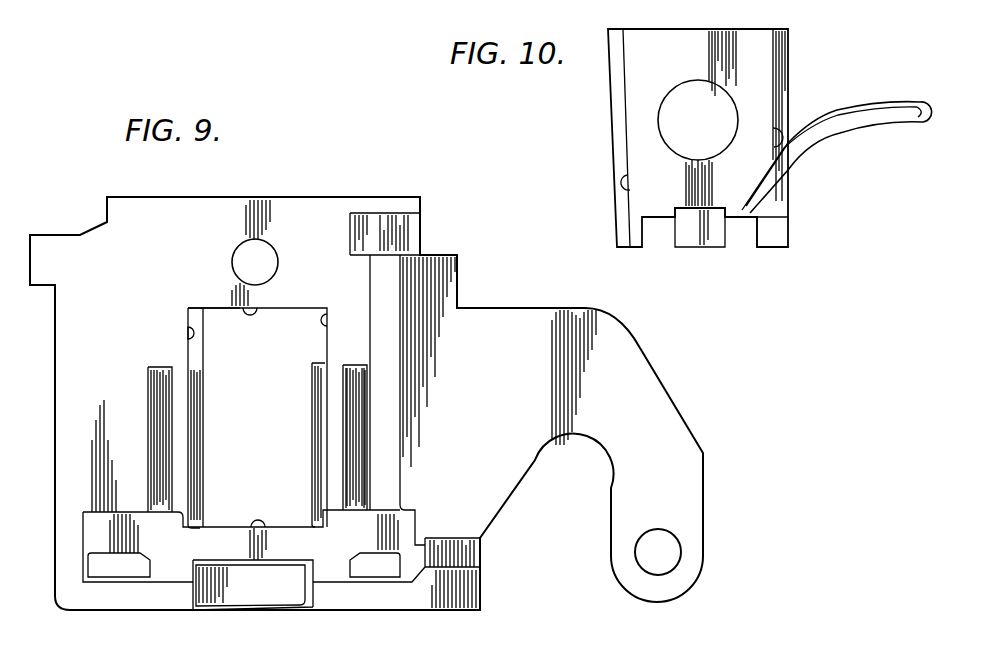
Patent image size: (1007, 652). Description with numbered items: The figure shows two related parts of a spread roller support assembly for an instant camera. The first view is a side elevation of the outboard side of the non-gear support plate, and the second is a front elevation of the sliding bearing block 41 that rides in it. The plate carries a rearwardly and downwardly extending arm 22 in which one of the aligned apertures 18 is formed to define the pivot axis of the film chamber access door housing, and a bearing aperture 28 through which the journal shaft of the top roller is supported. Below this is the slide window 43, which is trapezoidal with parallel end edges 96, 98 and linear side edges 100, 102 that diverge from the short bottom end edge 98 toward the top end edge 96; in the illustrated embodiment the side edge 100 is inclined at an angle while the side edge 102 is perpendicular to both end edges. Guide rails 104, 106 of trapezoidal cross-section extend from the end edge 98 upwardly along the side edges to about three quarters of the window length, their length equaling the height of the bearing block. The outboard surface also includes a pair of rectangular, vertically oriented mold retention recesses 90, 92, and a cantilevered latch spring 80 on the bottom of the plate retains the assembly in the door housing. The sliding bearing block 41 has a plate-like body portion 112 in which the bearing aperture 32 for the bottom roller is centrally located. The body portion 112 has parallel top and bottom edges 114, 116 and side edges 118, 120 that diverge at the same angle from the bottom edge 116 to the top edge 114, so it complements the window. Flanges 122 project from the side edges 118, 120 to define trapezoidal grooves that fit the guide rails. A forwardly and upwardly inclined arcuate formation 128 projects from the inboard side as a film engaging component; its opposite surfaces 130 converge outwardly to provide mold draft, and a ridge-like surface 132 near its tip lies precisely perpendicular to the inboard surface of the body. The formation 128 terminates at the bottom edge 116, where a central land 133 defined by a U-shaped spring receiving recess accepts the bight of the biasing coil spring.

In FIG. 9, the aligned apertures 18 is at (668, 556).
In FIG. 9, the arm 22 is at (686, 508).
In FIG. 9, the bearing aperture 28 is at (258, 262).
In FIG. 9, the slide window 43 is at (257, 418).
In FIG. 9, the cantilevered latch spring 80 is at (262, 593).
In FIG. 9, the mold retention recess 90 is at (160, 368).
In FIG. 9, the mold retention recess 92 is at (360, 422).
In FIG. 9, the end edge 96 is at (258, 308).
In FIG. 9, the end edge 98 is at (262, 530).
In FIG. 9, the side edge 100 is at (190, 312).
In FIG. 9, the side edge 102 is at (327, 315).
In FIG. 9, the guide rail 104 is at (318, 405).
In FIG. 9, the guide rail 106 is at (205, 480).
In FIG. 10, the sliding bearing block 41 is at (797, 50).
In FIG. 10, the body portion 112 is at (606, 150).
In FIG. 10, the top edge 114 is at (690, 29).
In FIG. 10, the bottom edge 116 is at (766, 246).
In FIG. 10, the side edge 118 is at (629, 181).
In FIG. 10, the side edge 120 is at (775, 146).
In FIG. 10, the flanges 122 is at (614, 105).
In FIG. 10, the arcuate formation 128 is at (876, 122).
In FIG. 10, the opposite surfaces 130 is at (836, 122).
In FIG. 10, the ridge-like surface 132 is at (912, 108).
In FIG. 10, the central land 133 is at (690, 235).
In FIG. 10, the bearing aperture 32 is at (713, 98).